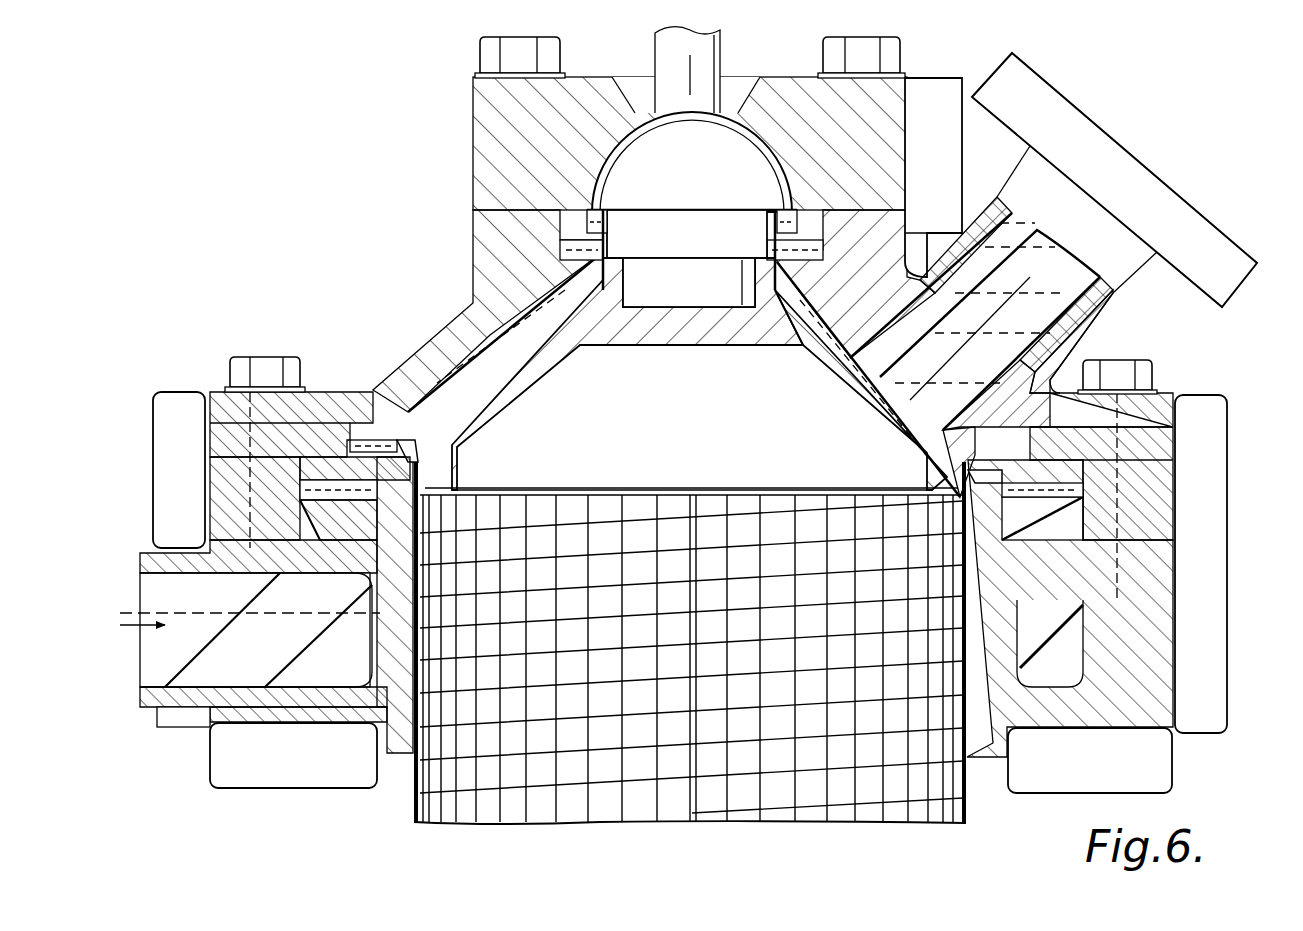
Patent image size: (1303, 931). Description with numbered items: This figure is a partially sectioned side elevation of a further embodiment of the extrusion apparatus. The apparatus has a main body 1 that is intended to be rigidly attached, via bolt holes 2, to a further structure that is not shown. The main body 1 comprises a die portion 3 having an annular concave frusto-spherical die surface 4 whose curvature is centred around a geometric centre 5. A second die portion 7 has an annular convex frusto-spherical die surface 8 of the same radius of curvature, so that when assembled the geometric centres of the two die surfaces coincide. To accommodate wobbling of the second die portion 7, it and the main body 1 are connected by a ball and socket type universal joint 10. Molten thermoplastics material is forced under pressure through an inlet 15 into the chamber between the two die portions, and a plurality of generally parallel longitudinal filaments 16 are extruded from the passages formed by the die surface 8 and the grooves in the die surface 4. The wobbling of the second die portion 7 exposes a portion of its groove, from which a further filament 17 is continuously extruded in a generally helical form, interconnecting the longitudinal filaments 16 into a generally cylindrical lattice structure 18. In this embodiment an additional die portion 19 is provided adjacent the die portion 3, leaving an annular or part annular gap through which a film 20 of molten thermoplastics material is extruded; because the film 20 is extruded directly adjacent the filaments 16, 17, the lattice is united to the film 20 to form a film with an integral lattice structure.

The main body 1 is at (390, 253).
The bolt holes 2 is at (245, 385).
The die portion 3 is at (1030, 467).
The die surface 4 is at (414, 440).
The geometric centre 5 is at (690, 220).
The second die portion 7 is at (672, 414).
The die surface 8 is at (452, 495).
The universal joint 10 is at (737, 100).
The inlet 15 is at (1105, 318).
The filaments 16 is at (932, 810).
The filament 17 is at (463, 767).
The lattice structure 18 is at (430, 833).
The additional die portion 19 is at (1080, 497).
The film 20 is at (937, 783).